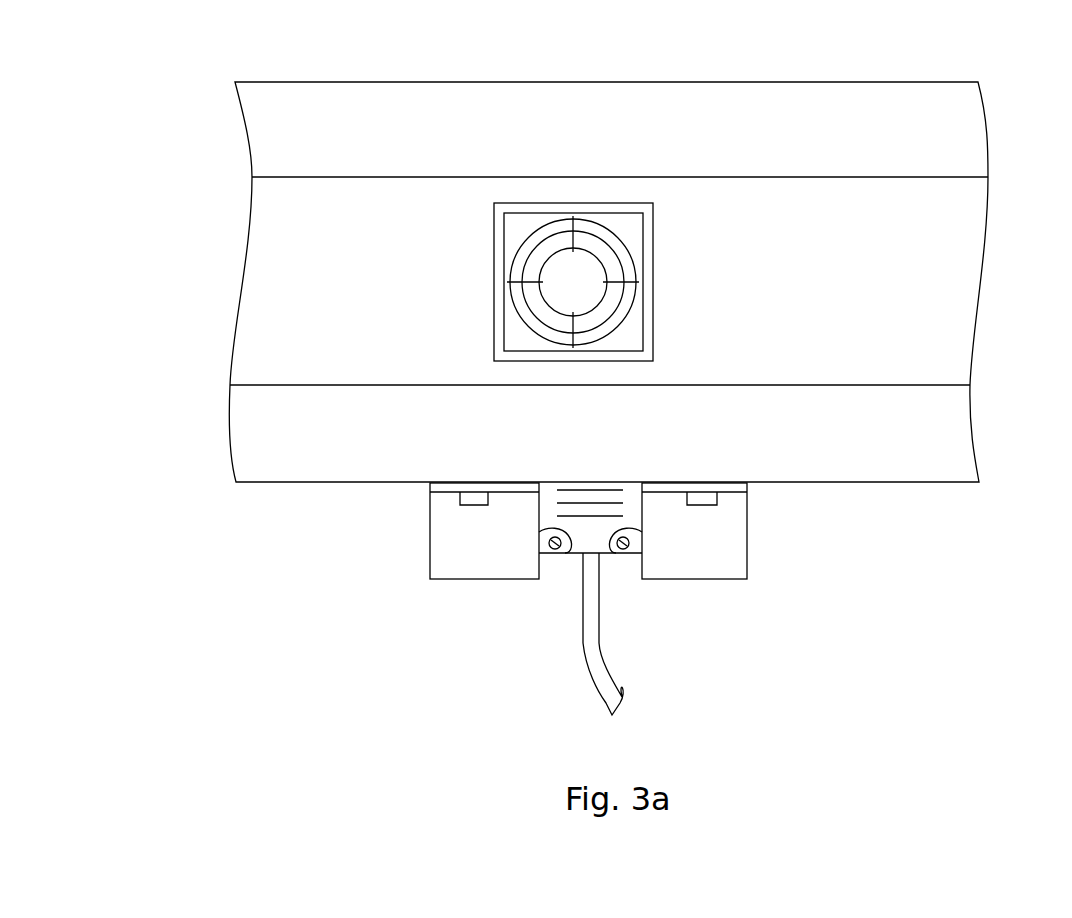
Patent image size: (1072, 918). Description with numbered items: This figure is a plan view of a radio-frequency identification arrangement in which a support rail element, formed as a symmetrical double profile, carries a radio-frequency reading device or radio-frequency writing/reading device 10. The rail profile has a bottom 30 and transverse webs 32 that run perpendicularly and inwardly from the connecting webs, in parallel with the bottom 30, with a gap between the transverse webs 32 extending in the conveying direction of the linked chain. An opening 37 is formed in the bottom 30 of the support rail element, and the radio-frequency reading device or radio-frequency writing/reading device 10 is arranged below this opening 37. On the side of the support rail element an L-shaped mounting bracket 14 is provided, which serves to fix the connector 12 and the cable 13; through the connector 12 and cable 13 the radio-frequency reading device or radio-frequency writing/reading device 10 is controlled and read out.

The radio-frequency reading device or radio-frequency writing/reading device 10 is at (520, 300).
The connector 12 is at (577, 540).
The cable 13 is at (605, 686).
The L-shaped mounting bracket 14 is at (480, 562).
The bottom 30 is at (955, 268).
The transverse webs 32 is at (898, 108).
The opening 37 is at (630, 228).